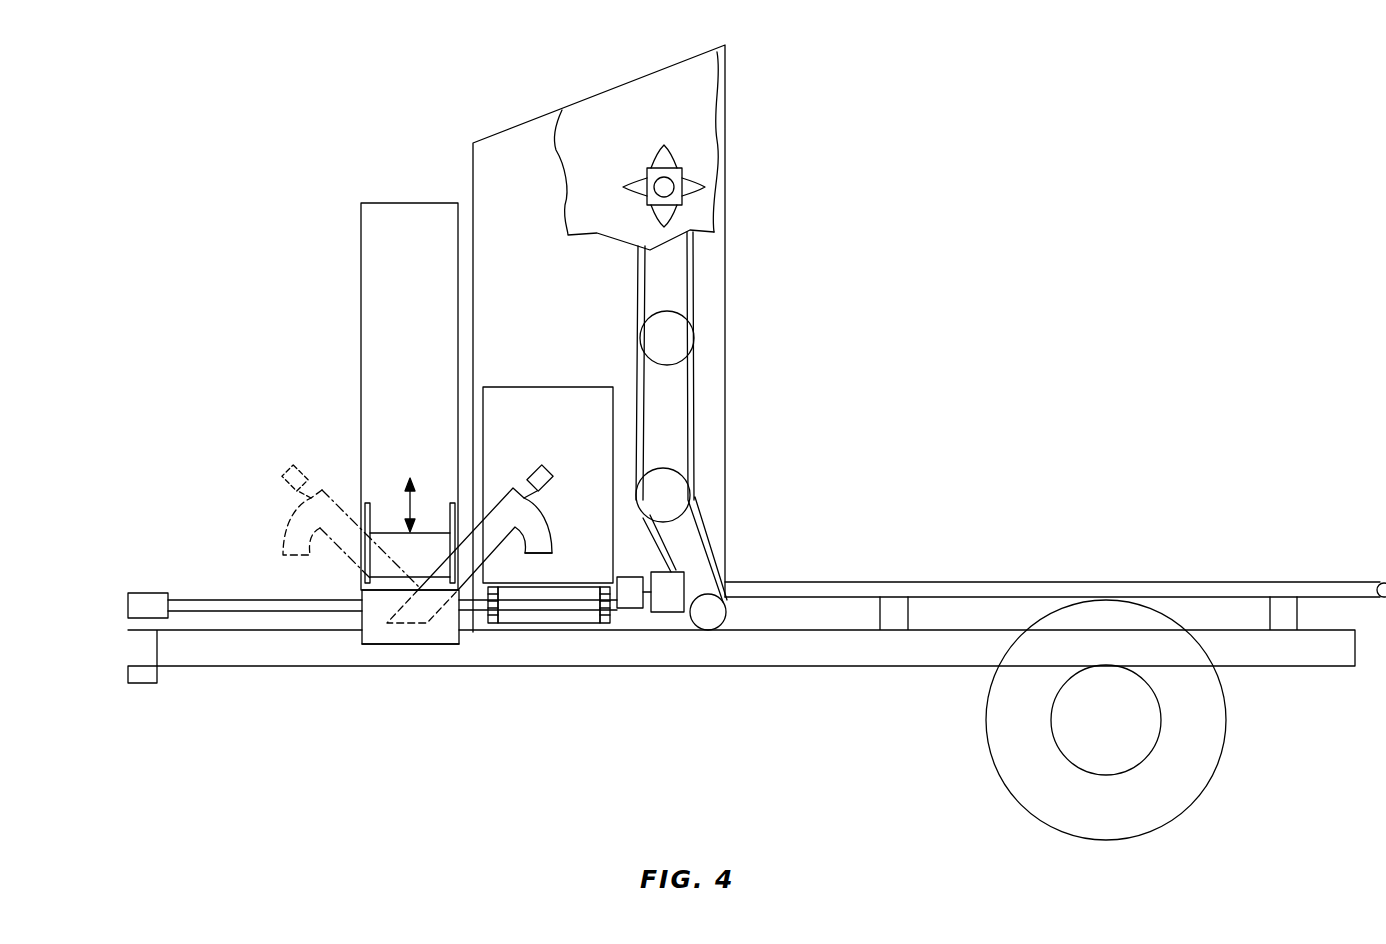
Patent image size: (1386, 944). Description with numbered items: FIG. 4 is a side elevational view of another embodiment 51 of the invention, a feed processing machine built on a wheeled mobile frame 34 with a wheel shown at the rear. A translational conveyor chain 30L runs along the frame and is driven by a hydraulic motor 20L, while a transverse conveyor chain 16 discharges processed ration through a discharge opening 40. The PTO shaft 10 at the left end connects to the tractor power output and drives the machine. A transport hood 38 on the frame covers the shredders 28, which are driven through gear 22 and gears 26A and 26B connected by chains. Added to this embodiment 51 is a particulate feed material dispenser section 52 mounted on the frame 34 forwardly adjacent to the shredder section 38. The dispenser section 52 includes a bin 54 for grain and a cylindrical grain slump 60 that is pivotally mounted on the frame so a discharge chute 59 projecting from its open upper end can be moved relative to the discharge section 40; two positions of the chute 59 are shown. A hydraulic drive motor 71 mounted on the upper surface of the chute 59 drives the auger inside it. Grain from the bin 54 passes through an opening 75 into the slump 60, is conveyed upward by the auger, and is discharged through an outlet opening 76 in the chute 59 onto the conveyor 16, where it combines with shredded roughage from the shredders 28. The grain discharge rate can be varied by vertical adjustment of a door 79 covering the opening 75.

The PTO shaft 10 is at (250, 600).
The translational conveyor system chain 16 is at (585, 623).
The hydraulic motor 20L is at (667, 612).
The gear 22 is at (712, 613).
The gear 26A is at (667, 338).
The gear 26B is at (663, 495).
The shredders 28 is at (690, 175).
The translational conveyor chain 30L is at (947, 582).
The mobile frame 34 is at (902, 666).
The transport hood 38 is at (510, 127).
The discharge opening 40 is at (505, 398).
The embodiment 51 is at (877, 192).
The particulate feed material dispenser section 52 is at (288, 315).
The bin 54 is at (361, 228).
The discharge chute 59 is at (507, 510).
The cylindrical grain slump 60 is at (410, 644).
The hydraulic drive motor 71 is at (552, 467).
The opening 75 is at (387, 590).
The outlet opening 76 is at (539, 555).
The door 79 is at (388, 542).